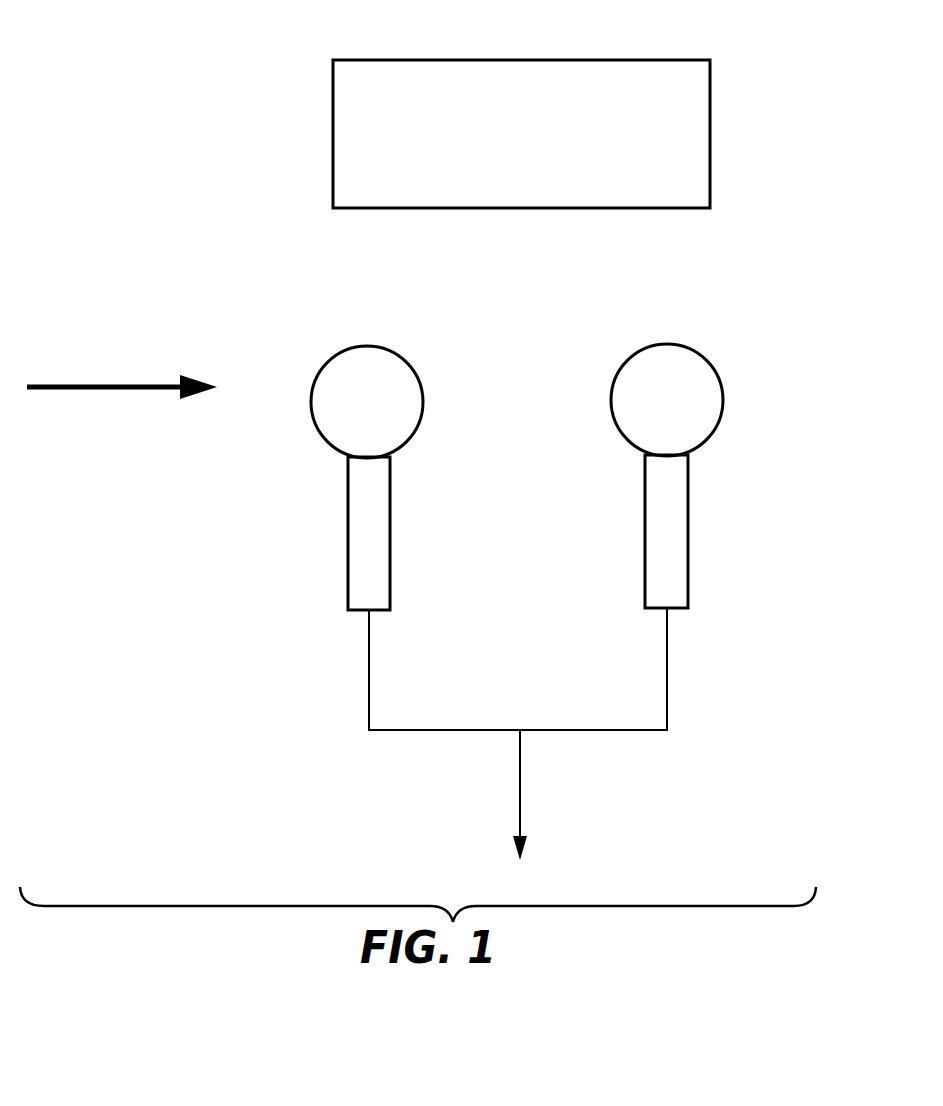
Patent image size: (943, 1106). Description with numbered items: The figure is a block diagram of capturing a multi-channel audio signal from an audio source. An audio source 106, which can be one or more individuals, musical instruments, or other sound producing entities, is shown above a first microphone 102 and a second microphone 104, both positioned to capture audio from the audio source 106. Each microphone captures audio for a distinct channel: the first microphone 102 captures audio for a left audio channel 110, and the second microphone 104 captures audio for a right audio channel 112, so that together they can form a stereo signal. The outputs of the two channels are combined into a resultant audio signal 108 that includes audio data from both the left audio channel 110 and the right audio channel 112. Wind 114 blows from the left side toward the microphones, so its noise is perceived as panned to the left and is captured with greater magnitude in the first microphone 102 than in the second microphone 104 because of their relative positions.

The first microphone 102 is at (315, 362).
The second microphone 104 is at (612, 362).
The audio source 106 is at (427, 44).
The audio signal 108 is at (508, 800).
The left audio channel 110 is at (655, 688).
The right audio channel 112 is at (386, 688).
The wind 114 is at (119, 364).